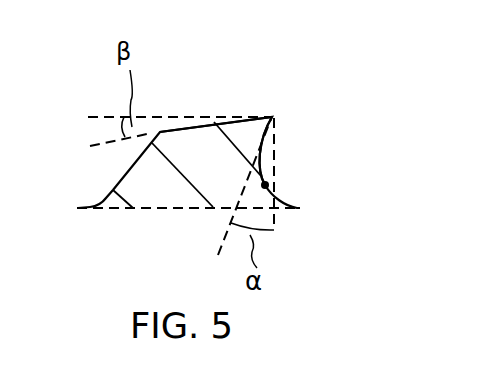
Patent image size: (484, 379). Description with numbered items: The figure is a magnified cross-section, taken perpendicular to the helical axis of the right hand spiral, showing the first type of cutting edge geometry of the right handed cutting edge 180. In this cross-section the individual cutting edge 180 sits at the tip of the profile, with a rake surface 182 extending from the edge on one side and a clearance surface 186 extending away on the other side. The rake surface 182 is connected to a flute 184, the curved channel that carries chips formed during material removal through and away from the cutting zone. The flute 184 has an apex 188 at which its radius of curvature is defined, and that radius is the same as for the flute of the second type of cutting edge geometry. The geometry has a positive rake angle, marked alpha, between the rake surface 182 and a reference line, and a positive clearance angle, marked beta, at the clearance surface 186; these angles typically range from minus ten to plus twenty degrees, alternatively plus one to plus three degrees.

The right handed cutting edge 180 is at (272, 117).
The rake surface 182 is at (272, 123).
The flute 184 is at (292, 178).
The clearance surface 186 is at (222, 120).
The apex of the flute 188 is at (264, 185).